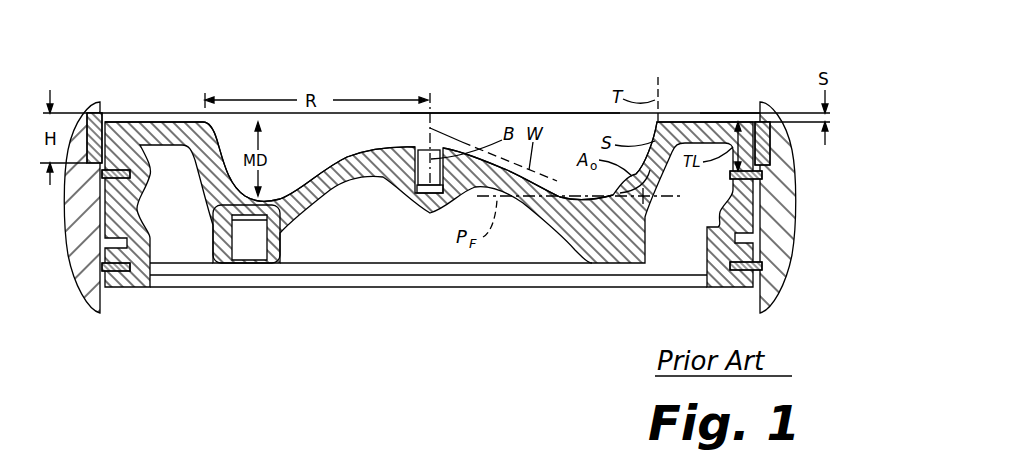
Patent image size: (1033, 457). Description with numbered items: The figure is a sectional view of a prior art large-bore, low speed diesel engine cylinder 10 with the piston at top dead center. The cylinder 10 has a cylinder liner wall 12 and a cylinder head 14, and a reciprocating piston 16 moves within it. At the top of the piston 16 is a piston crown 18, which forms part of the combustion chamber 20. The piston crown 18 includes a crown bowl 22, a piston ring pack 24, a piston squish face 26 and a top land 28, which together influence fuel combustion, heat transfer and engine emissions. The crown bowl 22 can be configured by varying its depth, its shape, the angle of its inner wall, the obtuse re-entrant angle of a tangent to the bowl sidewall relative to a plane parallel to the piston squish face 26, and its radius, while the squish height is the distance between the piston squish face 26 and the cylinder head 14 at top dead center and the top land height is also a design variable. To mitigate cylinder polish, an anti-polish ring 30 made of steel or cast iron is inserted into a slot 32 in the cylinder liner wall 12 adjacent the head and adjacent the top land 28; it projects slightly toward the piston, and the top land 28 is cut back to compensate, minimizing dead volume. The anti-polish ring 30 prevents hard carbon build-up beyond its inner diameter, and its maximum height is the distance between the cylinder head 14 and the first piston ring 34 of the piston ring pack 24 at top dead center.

The cylinder 10 is at (553, 112).
The cylinder liner wall 12 is at (110, 211).
The cylinder head 14 is at (483, 120).
The reciprocating piston 16 is at (693, 112).
The piston crown 18 is at (733, 114).
The combustion chamber 20 is at (274, 121).
The crown bowl 22 is at (550, 177).
The piston ring pack 24 is at (763, 263).
The piston squish face 26 is at (158, 121).
The top land 28 is at (763, 177).
The anti-polish ring 30 is at (760, 148).
The slot 32 is at (97, 114).
The first piston ring 34 is at (763, 190).